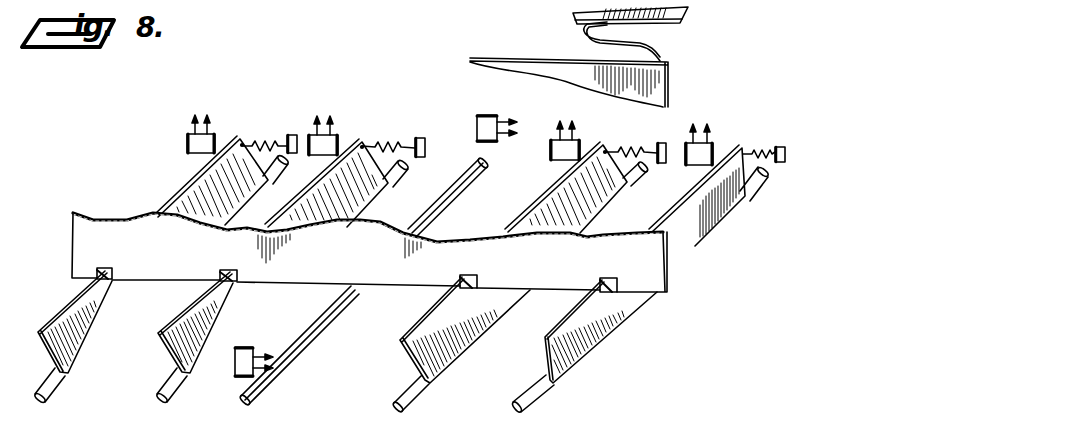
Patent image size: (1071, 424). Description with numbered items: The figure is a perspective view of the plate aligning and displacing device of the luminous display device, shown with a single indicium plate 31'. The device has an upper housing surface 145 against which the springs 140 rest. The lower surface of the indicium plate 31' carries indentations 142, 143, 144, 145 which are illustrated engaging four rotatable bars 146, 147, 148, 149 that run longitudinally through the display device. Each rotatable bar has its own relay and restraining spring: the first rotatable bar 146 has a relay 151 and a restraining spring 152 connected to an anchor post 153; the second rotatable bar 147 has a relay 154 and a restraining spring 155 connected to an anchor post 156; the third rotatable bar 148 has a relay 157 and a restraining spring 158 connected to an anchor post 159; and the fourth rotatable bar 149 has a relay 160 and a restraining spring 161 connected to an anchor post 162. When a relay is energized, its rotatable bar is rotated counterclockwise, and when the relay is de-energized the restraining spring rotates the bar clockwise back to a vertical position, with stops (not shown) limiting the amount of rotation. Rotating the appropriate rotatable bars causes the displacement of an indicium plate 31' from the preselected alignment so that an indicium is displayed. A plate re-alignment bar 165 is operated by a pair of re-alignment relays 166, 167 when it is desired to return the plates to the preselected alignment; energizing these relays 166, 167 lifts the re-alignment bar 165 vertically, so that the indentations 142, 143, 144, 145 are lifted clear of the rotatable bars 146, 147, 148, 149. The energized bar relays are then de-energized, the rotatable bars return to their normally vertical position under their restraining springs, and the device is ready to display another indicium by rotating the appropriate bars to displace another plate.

The indicium plate 31' is at (395, 175).
The spring 140 is at (583, 32).
The indentation 142 is at (107, 268).
The indentation 143 is at (232, 270).
The indentation 144 is at (474, 276).
The upper housing surface 145 is at (690, 7).
The first rotatable bar 146 is at (93, 343).
The second rotatable bar 147 is at (205, 358).
The third rotatable bar 148 is at (452, 357).
The fourth rotatable bar 149 is at (568, 360).
The relay 151 is at (187, 138).
The restraining spring 152 is at (243, 146).
The anchor post 153 is at (291, 135).
The relay 154 is at (335, 135).
The restraining spring 155 is at (381, 145).
The anchor post 156 is at (420, 138).
The relay 157 is at (580, 140).
The restraining spring 158 is at (624, 152).
The anchor post 159 is at (662, 143).
The relay 160 is at (715, 143).
The restraining spring 161 is at (757, 153).
The anchor post 162 is at (780, 147).
The plate re-alignment bar 165 is at (487, 172).
The re-alignment relay 166 is at (487, 115).
The re-alignment relay 167 is at (250, 347).